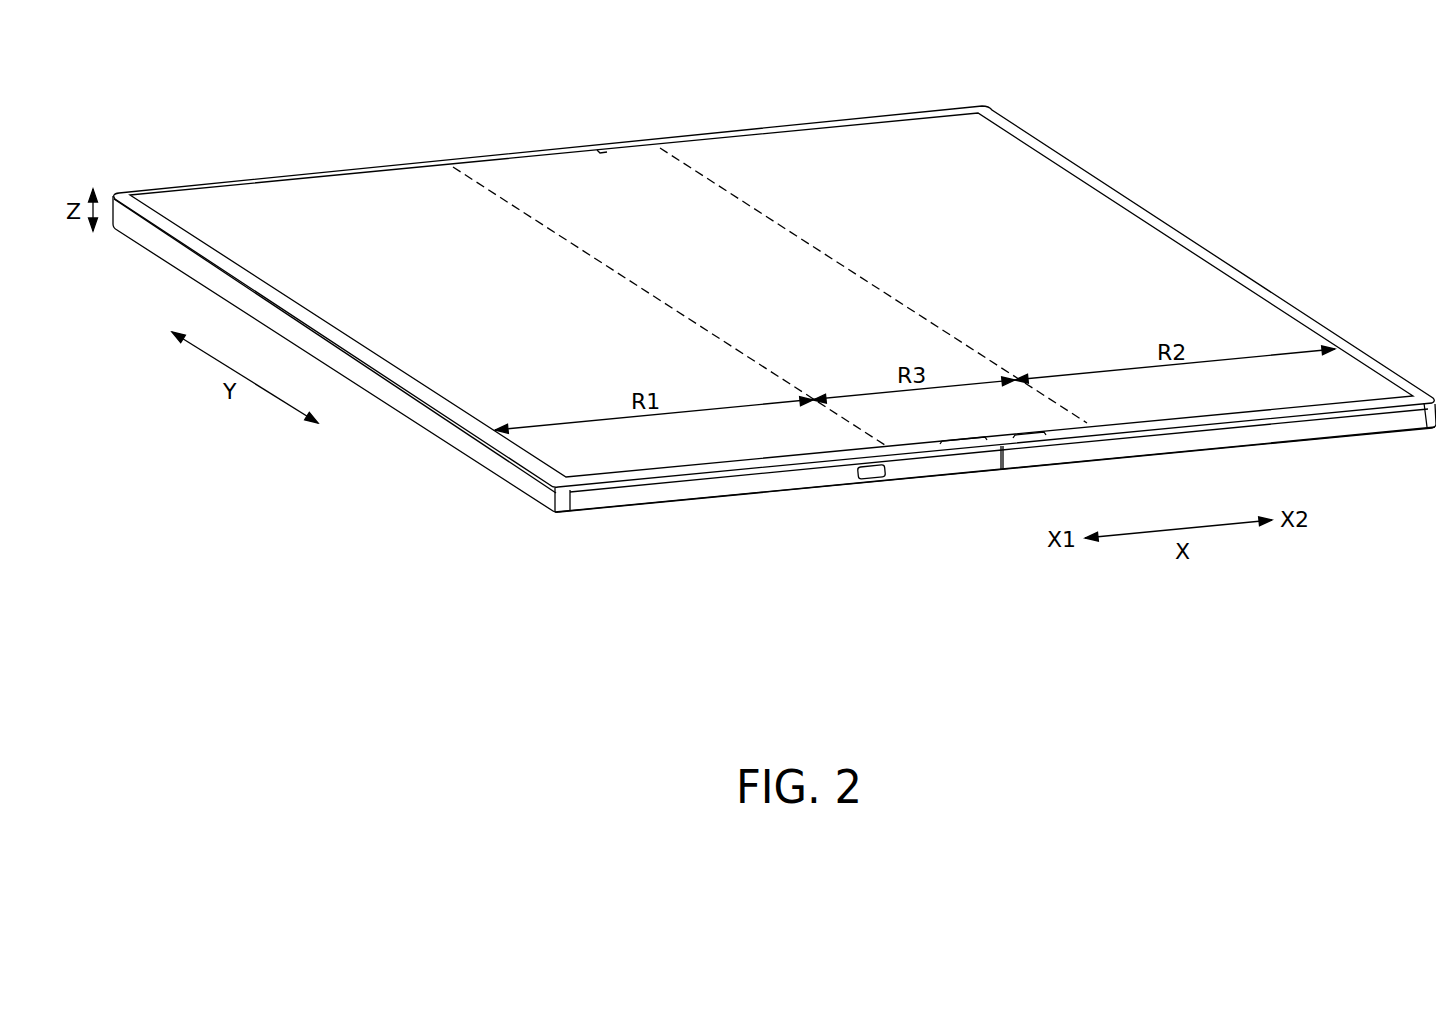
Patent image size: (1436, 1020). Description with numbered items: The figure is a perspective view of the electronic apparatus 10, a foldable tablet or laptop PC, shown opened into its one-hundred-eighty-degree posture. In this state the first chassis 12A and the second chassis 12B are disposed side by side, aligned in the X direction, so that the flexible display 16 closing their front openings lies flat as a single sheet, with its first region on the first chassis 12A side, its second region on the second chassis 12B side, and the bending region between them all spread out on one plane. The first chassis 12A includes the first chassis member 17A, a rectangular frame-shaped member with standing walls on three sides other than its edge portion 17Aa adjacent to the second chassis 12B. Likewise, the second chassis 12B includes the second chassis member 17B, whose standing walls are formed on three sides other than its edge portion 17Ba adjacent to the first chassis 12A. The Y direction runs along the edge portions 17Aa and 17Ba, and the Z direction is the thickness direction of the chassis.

The electronic apparatus 10 is at (158, 94).
The display 16 is at (1010, 182).
The first chassis 12A is at (708, 512).
The second chassis 12B is at (1344, 452).
The first chassis member 17A is at (602, 503).
The second chassis member 17B is at (1397, 424).
The edge portion 17Aa is at (1006, 463).
The edge portion 17Ba is at (1000, 457).